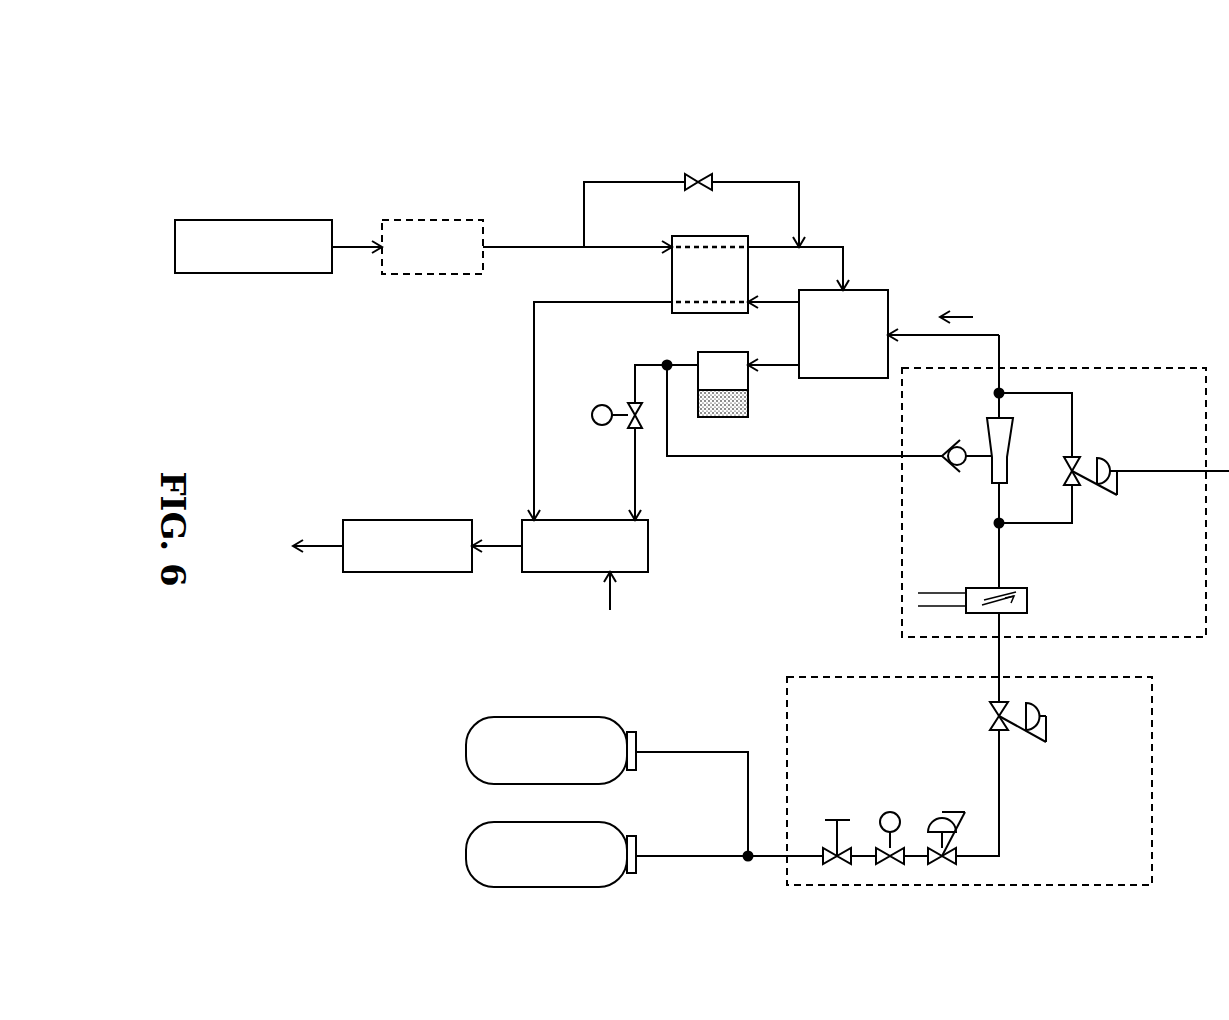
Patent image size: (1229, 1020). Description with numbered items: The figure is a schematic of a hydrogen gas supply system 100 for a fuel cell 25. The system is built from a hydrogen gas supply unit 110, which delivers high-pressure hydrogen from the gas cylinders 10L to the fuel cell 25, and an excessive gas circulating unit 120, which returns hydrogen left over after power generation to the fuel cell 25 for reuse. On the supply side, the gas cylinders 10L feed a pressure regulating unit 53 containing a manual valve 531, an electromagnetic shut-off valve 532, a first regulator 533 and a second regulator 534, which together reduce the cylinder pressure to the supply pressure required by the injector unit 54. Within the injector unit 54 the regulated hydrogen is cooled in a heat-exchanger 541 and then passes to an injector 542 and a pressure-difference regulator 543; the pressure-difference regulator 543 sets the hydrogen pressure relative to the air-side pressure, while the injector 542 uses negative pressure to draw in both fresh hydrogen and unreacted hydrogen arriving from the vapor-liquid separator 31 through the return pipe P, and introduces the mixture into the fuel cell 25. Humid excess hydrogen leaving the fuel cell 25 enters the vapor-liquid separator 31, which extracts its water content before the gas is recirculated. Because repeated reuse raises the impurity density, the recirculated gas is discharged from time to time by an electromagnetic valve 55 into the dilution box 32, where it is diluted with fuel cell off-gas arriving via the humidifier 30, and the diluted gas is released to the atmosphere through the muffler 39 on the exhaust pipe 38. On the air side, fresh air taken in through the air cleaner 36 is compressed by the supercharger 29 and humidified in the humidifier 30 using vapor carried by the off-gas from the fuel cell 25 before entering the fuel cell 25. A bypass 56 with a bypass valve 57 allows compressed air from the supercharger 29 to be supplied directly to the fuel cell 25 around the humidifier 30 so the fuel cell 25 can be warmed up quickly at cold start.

The hydrogen gas supply system 100 is at (973, 148).
The hydrogen gas supply unit 110 is at (1074, 295).
The excessive gas circulating unit 120 is at (510, 375).
The air cleaner 36 is at (303, 220).
The supercharger 29 is at (458, 220).
The bypass 56 is at (780, 182).
The bypass valve 57 is at (698, 172).
The humidifier 30 is at (735, 236).
The fuel cell 25 is at (872, 290).
The vapor-liquid separator 31 is at (748, 390).
The electromagnetic valve 55 is at (600, 428).
The muffler 39 is at (425, 520).
The dilution box 32 is at (648, 548).
The exhaust pipe 38 is at (323, 548).
The return pipe P is at (823, 456).
The injector unit 54 is at (1160, 368).
The injector 542 is at (1010, 470).
The pressure-difference regulator 543 is at (1105, 455).
The heat-exchanger 541 is at (1027, 607).
The pressure regulating unit 53 is at (833, 677).
The second regulator 534 is at (1050, 730).
The manual valve 531 is at (838, 820).
The electromagnetic shut-off valve 532 is at (890, 812).
The first regulator 533 is at (942, 812).
The gas cylinder 10L is at (466, 750).